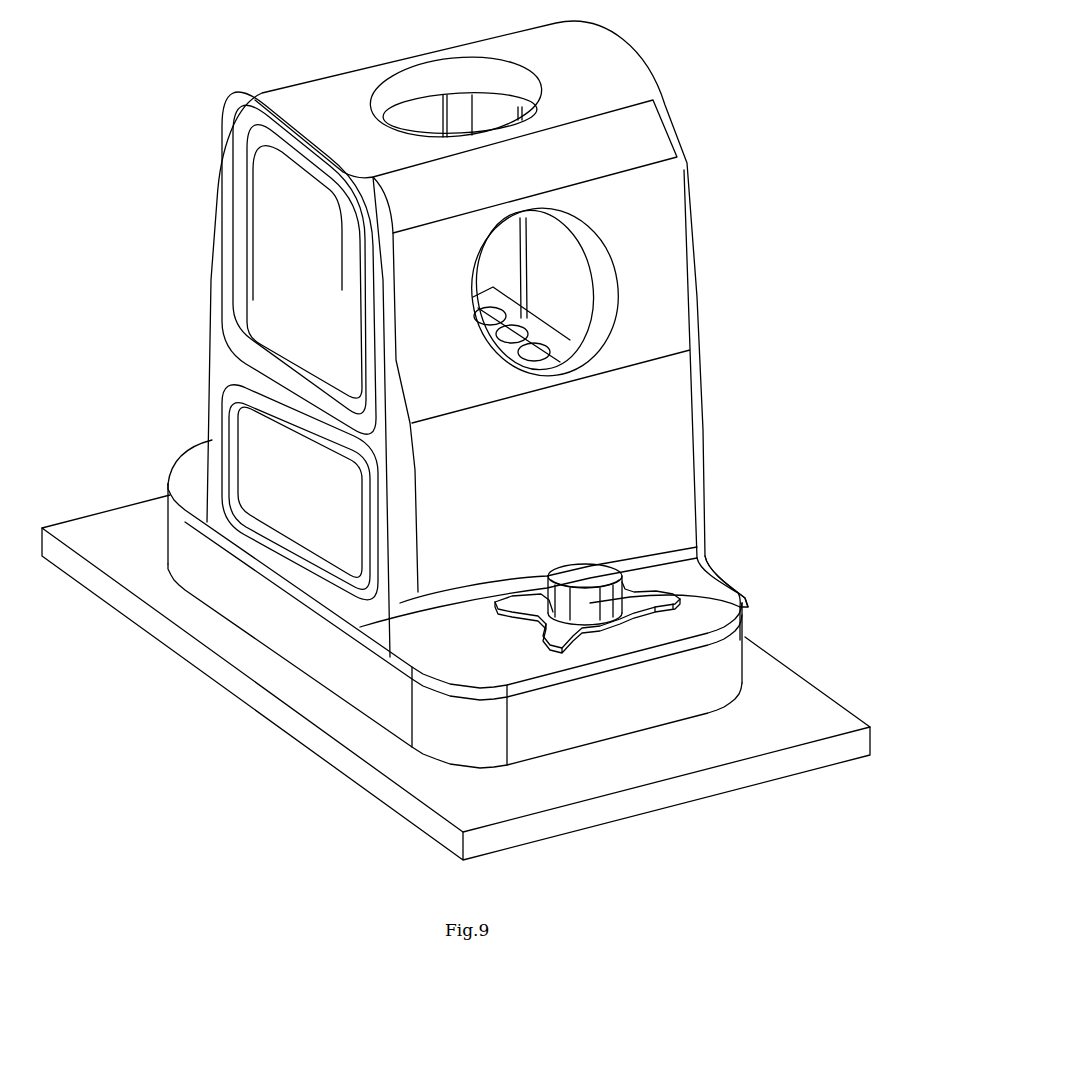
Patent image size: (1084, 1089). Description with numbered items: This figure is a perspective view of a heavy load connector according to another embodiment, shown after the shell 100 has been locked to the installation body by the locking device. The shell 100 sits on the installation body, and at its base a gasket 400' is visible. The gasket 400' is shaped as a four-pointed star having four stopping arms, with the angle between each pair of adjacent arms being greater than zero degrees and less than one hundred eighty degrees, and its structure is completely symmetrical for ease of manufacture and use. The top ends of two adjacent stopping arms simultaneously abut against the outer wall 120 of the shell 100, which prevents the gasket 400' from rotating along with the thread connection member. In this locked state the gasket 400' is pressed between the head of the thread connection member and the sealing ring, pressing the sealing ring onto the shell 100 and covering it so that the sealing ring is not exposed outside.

The shell 100 is at (453, 339).
The outer wall 120 is at (657, 440).
The gasket 400' is at (540, 666).